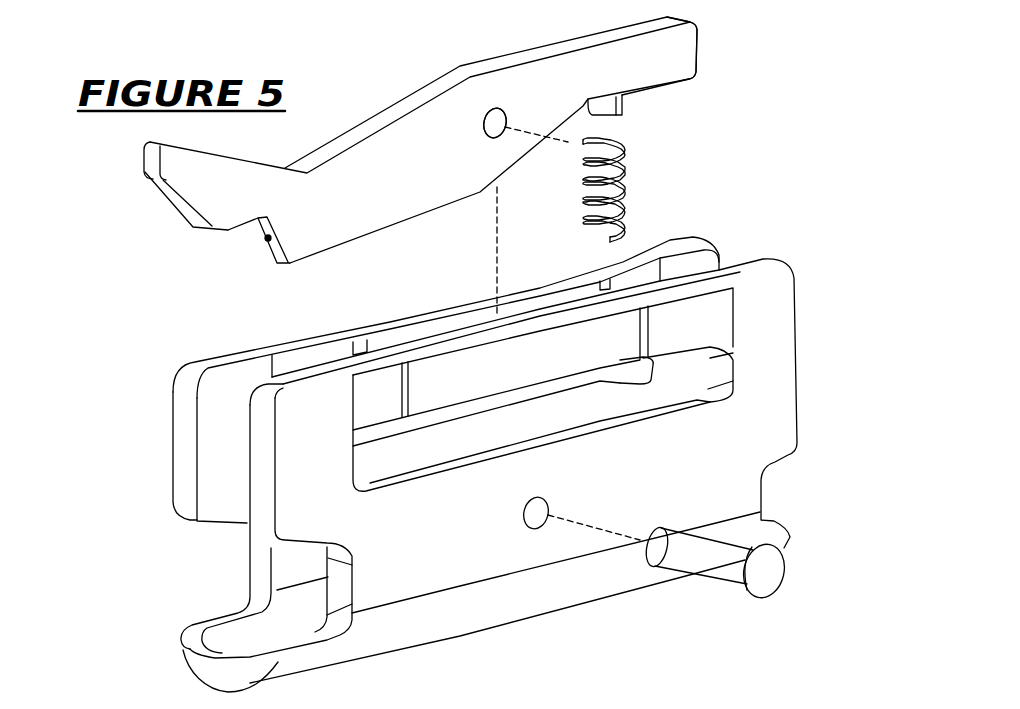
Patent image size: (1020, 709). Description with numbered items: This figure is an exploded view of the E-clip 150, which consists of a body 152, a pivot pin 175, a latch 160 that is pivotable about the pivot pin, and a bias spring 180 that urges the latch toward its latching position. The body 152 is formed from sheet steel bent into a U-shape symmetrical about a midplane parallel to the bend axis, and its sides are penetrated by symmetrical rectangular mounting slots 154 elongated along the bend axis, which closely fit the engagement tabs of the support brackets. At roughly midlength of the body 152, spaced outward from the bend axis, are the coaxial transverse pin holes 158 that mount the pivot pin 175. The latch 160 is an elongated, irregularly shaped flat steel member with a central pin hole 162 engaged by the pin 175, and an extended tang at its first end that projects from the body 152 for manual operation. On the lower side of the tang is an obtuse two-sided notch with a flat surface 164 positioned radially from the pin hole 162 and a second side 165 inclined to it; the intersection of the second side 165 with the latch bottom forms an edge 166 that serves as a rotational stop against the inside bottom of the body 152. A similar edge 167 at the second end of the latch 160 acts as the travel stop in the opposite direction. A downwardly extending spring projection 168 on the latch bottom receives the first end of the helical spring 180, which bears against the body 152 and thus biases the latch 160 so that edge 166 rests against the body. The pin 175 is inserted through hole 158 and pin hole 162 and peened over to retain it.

The E-clip 150 is at (815, 184).
The body 152 is at (797, 340).
The mounting slots 154 is at (692, 350).
The pin holes 158 is at (541, 526).
The latch 160 is at (696, 53).
The pin hole 162 is at (488, 112).
The flat surface 164 is at (226, 231).
The second side 165 is at (267, 245).
The edge 166 is at (277, 263).
The edge 167 is at (690, 79).
The spring projection 168 is at (620, 115).
The pivot pin 175 is at (784, 553).
The bias spring 180 is at (628, 197).